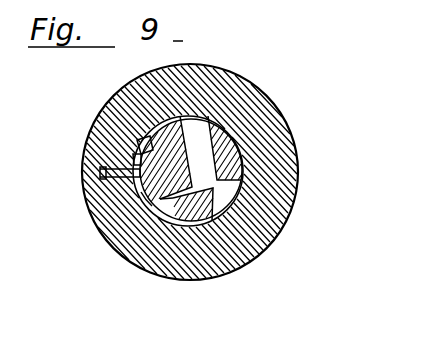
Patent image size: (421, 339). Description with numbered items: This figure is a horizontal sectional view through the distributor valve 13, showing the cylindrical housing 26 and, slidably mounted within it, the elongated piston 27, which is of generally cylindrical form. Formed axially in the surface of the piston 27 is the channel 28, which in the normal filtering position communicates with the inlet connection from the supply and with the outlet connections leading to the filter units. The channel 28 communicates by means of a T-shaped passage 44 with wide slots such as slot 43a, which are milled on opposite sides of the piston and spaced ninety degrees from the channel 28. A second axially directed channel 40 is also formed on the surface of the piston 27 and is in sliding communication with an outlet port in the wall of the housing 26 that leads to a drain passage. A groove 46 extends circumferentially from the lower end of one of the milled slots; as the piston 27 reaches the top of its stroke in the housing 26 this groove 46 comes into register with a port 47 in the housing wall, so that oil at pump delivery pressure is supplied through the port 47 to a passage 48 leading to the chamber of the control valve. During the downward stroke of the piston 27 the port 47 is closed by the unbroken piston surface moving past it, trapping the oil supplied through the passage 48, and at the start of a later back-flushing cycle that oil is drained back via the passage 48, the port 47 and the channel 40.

The distributor valve 13 is at (263, 257).
The cylindrical housing 26 is at (293, 138).
The piston 27 is at (243, 172).
The channel 28 is at (240, 212).
The second axially directed channel 40 is at (143, 145).
The slot 43a is at (222, 133).
The T-shaped passage 44 is at (168, 210).
The groove 46 is at (135, 157).
The port 47 is at (140, 193).
The passage 48 is at (100, 174).